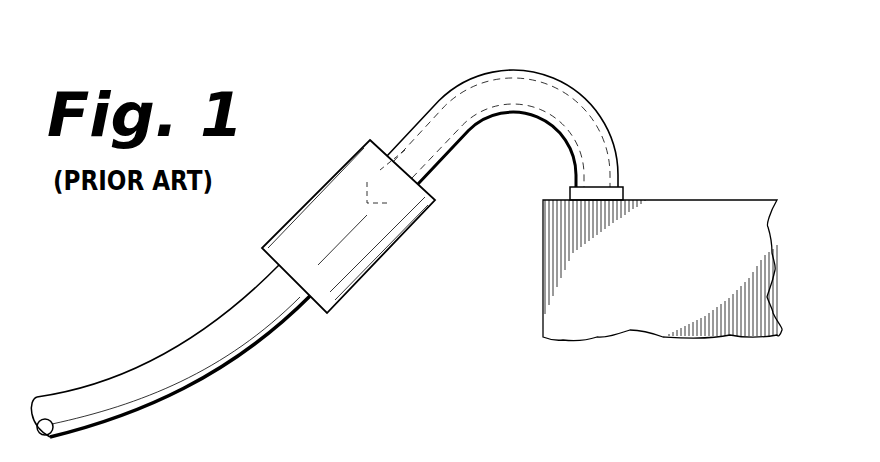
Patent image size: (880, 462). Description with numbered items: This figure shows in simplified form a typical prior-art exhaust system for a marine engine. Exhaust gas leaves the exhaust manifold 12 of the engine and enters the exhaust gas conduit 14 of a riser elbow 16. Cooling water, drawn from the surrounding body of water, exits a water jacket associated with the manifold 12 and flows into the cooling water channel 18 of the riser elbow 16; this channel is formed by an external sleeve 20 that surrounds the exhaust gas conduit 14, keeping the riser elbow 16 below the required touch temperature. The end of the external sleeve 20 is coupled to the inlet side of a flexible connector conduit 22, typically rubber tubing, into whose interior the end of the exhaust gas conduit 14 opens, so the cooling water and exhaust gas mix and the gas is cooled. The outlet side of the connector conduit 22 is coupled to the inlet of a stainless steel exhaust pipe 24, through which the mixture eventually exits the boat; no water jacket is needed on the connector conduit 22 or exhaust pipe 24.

The exhaust manifold 12 is at (678, 280).
The exhaust gas conduit 14 is at (567, 93).
The riser elbow 16 is at (502, 97).
The cooling water channel 18 is at (580, 127).
The external sleeve 20 is at (425, 115).
The flexible connector conduit 22 is at (335, 177).
The exhaust pipe 24 is at (213, 330).